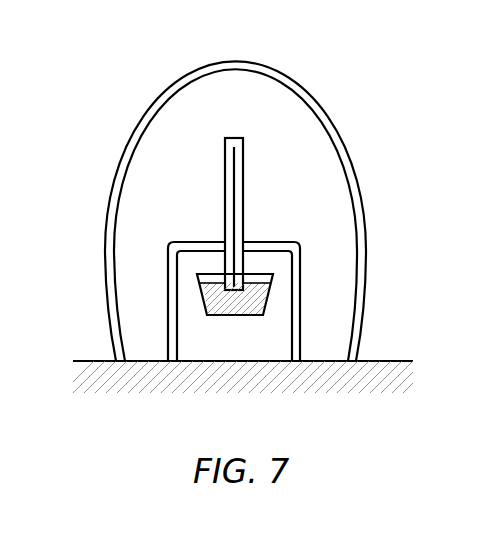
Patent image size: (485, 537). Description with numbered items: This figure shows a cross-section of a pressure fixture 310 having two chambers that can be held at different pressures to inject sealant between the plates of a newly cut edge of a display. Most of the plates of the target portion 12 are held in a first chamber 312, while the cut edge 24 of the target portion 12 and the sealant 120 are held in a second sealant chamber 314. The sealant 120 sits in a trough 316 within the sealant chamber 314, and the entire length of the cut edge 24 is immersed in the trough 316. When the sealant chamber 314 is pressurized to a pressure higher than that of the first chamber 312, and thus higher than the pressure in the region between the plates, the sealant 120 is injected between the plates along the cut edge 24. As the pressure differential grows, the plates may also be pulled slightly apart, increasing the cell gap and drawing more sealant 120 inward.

The pressure fixture 310 is at (319, 52).
The first chamber 312 is at (145, 167).
The sealant chamber 314 is at (188, 322).
The trough 316 is at (243, 317).
The target portion 12 is at (266, 166).
The sealant 120 is at (258, 301).
The cut edge 24 is at (241, 290).